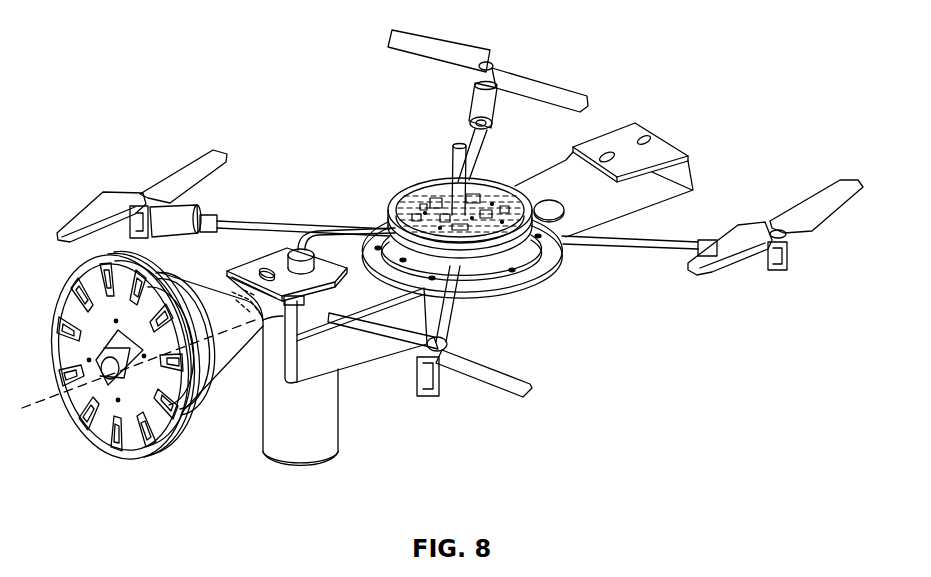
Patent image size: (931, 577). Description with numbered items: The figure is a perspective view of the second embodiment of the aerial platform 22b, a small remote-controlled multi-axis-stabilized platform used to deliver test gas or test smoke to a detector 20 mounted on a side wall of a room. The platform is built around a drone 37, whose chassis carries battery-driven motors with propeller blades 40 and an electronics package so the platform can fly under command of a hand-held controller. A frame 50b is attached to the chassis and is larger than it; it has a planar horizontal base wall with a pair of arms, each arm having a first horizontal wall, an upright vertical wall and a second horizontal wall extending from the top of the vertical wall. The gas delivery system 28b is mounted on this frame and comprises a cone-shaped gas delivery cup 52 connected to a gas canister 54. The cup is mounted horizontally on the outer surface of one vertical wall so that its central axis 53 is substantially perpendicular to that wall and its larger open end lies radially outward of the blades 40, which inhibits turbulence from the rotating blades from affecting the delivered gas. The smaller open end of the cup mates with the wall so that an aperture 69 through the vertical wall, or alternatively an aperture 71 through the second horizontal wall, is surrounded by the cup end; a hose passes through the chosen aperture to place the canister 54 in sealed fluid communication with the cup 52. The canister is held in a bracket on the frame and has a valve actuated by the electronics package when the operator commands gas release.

The detector 20 is at (60, 279).
The aerial platform 22b is at (363, 129).
The gas delivery system 28b is at (213, 459).
The drone 37 is at (426, 181).
The propeller blades 40 is at (530, 82).
The frame 50b is at (663, 134).
The gas delivery cup 52 is at (233, 366).
The central axis 53 is at (42, 398).
The gas canister 54 is at (340, 427).
The aperture 69 is at (240, 290).
The aperture 71 is at (263, 272).